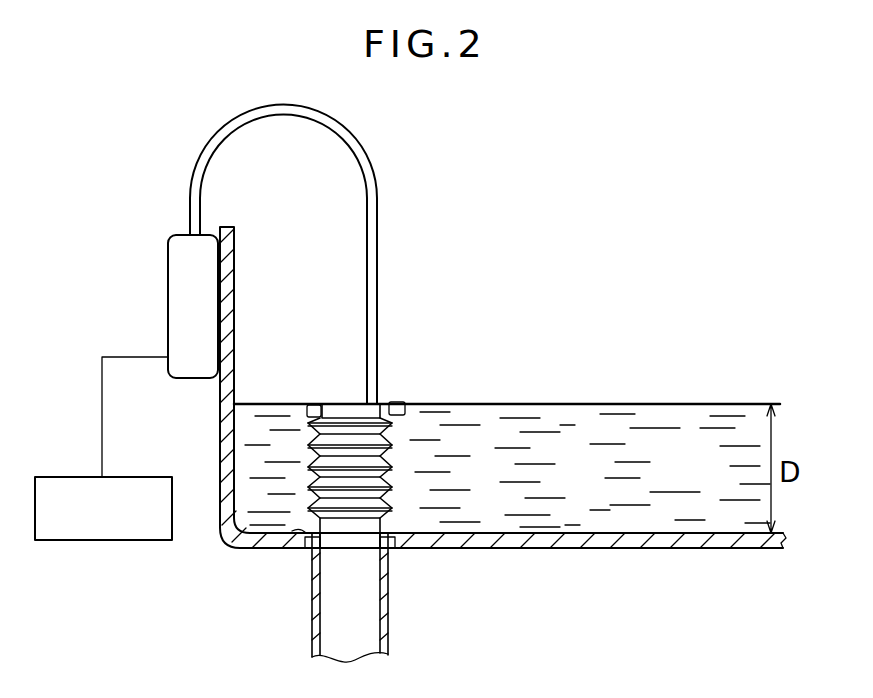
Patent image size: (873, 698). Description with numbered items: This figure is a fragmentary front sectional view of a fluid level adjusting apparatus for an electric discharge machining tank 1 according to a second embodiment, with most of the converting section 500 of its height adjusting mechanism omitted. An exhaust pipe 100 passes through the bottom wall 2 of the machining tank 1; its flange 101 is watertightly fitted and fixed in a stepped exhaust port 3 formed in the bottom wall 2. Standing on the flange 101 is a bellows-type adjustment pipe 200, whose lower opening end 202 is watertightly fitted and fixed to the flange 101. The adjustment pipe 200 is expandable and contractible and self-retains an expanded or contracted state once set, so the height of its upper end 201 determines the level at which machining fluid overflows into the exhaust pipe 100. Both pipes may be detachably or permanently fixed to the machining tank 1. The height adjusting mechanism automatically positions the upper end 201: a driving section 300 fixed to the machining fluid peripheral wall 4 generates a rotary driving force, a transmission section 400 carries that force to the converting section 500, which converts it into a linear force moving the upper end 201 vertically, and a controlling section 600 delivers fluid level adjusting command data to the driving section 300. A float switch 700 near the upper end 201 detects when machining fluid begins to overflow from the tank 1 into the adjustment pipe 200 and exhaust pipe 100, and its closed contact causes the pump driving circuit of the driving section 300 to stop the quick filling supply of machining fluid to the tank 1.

The electric discharge machining tank 1 is at (697, 556).
The bottom wall 2 is at (578, 550).
The stepped exhaust port 3 is at (300, 528).
The machining fluid peripheral wall 4 is at (220, 424).
The exhaust pipe 100 is at (388, 623).
The flange 101 is at (300, 547).
The bellows-type adjustment pipe 200 is at (393, 440).
The upper end of the adjustment pipe 201 is at (340, 404).
The lower opening end of the adjustment pipe 202 is at (363, 542).
The driving section 300 is at (172, 233).
The transmission section 400 is at (377, 184).
The converting section 500 is at (303, 410).
The controlling section 600 is at (118, 542).
The float switch 700 is at (399, 401).